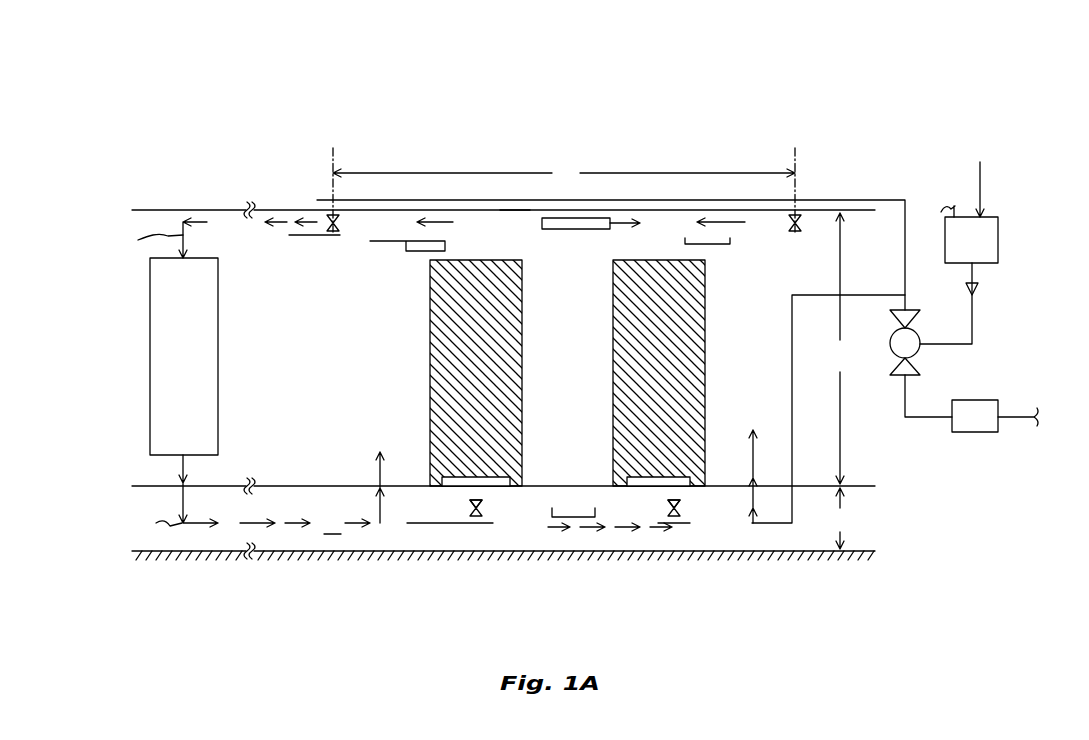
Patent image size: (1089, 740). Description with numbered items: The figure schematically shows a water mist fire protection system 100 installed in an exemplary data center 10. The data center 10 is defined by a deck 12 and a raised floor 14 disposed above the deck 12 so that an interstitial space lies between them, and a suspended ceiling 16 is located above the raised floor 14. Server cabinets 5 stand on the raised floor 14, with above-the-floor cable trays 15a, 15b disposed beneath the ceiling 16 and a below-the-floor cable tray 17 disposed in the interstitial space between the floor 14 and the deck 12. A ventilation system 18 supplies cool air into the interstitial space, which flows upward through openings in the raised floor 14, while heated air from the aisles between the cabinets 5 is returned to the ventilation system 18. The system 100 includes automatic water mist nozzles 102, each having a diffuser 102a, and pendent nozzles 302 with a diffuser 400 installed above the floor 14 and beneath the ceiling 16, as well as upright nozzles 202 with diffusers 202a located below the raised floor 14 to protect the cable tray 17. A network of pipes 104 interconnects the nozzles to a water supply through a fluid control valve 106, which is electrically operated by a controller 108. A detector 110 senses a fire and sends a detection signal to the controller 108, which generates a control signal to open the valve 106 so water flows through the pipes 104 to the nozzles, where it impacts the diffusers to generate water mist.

The water mist fire protection system 100 is at (770, 90).
The deck 12 is at (857, 551).
The raised floor 14 is at (857, 486).
The ventilation system 18 is at (218, 328).
The data center 10 is at (346, 359).
The server cabinet 5 is at (522, 323).
The suspended ceiling 16 is at (513, 213).
The above-the-floor cable tray 15a is at (412, 251).
The above-the-floor cable tray 15b is at (708, 253).
The detector 110 is at (585, 233).
The automatic nozzle 302 is at (340, 215).
The diffuser 400 is at (333, 236).
The automatic water mist nozzle 102 is at (792, 215).
The diffuser 102a is at (792, 230).
The nozzle 202 is at (485, 518).
The diffuser 202a is at (484, 506).
The below-the-floor cable tray 17 is at (573, 518).
The network of pipes 104 is at (888, 200).
The fluid control valve 106 is at (921, 356).
The controller 108 is at (1000, 240).